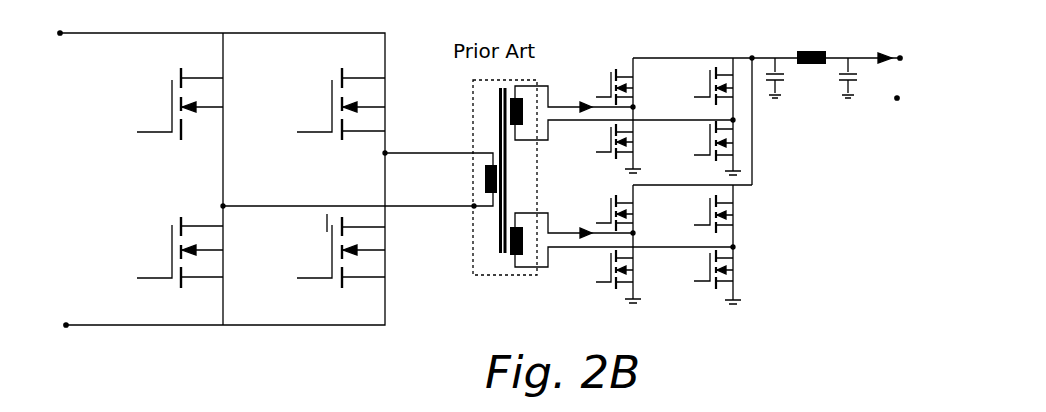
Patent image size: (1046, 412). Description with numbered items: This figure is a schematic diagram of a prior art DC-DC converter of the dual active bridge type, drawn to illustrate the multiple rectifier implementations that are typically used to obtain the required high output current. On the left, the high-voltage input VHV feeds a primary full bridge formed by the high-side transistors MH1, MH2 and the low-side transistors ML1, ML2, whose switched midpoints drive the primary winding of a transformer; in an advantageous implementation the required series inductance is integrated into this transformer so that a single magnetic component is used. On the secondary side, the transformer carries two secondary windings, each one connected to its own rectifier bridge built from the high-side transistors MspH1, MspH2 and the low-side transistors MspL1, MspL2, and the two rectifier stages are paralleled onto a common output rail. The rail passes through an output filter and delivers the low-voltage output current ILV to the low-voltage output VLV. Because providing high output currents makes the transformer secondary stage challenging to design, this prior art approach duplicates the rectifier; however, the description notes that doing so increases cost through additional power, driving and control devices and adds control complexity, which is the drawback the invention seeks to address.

The high-voltage input V_HV terminals VHV is at (43, 179).
The primary high-side transistor M_H1 MH1 is at (165, 104).
The primary high-side transistor M_H2 MH2 is at (325, 104).
The primary low-side transistor M_L1 ML1 is at (165, 252).
The primary low-side transistor M_L2 ML2 is at (325, 251).
The secondary-side high-side transistor M_spH1 MspH1 is at (595, 143).
The secondary-side high-side transistor M_spH2 MspH2 is at (691, 148).
The secondary-side low-side transistor M_spL1 MspL1 is at (599, 217).
The secondary-side low-side transistor M_spL2 MspL2 is at (692, 212).
The low-voltage output current I_LV ILV is at (872, 48).
The low-voltage output V_LV terminals VLV is at (907, 77).